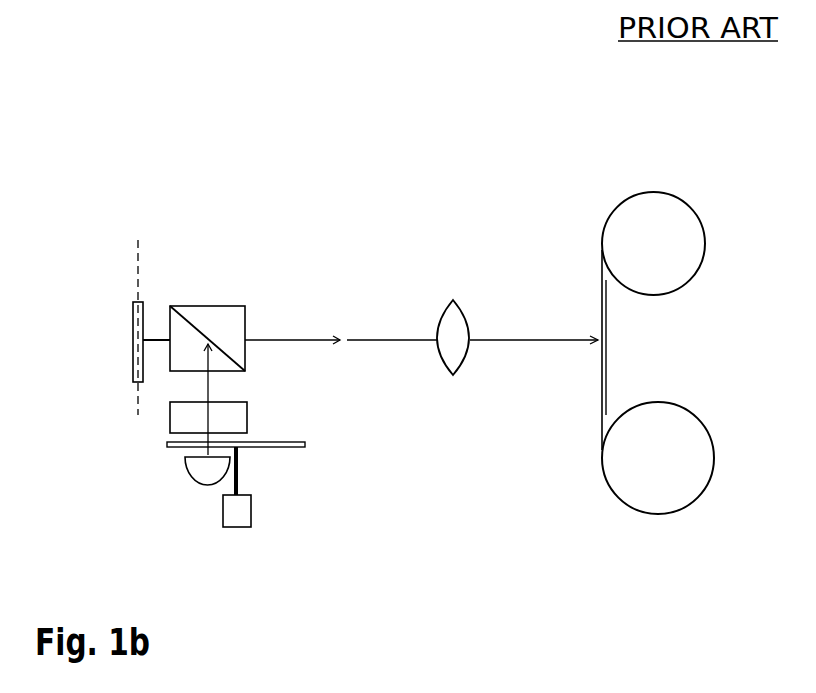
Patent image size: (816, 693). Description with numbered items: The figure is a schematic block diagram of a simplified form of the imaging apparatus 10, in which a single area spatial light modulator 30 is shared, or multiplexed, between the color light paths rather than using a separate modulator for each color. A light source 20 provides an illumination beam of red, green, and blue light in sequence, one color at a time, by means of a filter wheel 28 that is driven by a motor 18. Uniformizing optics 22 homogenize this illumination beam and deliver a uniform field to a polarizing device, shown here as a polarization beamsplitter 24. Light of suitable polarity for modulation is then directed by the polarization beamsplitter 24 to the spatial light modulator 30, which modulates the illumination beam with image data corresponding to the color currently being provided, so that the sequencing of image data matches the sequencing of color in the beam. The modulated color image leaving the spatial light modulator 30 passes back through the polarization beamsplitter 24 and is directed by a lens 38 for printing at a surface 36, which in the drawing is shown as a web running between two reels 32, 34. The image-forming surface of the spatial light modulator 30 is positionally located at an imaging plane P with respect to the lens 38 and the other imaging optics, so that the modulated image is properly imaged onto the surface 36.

The imaging apparatus 10 is at (182, 108).
The imaging plane P is at (142, 308).
The motor 18 is at (251, 510).
The light source 20 is at (197, 485).
The uniformizing optics 22 is at (168, 422).
The polarization beamsplitter 24 is at (197, 307).
The filter wheel 28 is at (297, 446).
The spatial light modulator 30 is at (133, 323).
The recording film 32 is at (600, 313).
The film reel 34 is at (702, 230).
The surface 36 is at (605, 362).
The lens 38 is at (460, 307).